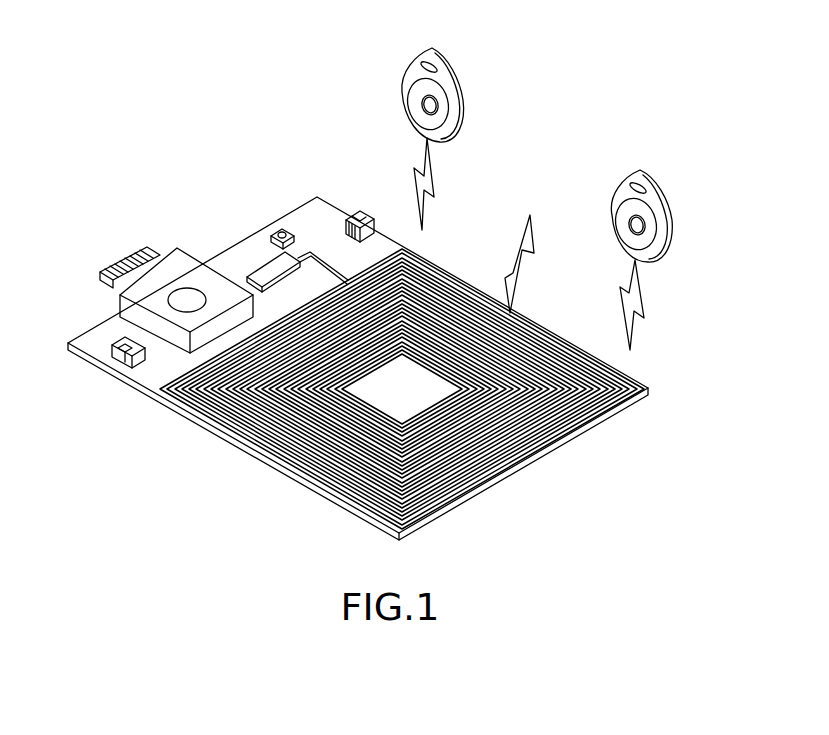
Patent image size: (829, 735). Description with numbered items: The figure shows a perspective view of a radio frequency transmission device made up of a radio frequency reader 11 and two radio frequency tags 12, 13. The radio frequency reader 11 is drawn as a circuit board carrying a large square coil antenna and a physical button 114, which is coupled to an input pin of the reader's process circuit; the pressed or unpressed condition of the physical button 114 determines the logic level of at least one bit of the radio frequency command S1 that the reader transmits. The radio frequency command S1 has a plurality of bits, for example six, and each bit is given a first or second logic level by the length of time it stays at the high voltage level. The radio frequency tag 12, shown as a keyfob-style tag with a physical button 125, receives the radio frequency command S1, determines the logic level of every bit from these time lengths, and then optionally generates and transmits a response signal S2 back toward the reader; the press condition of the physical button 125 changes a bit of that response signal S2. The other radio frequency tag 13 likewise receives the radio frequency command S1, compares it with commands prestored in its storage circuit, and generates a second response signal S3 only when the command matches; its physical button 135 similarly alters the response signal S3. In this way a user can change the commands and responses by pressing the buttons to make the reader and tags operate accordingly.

The radio frequency reader 11 is at (72, 322).
The physical button 114 is at (282, 228).
The radio frequency tag 12 is at (465, 80).
The physical button 125 is at (428, 105).
The radio frequency tag 13 is at (675, 200).
The physical button 135 is at (643, 229).
The radio frequency command S1 is at (517, 245).
The response signal S2 is at (416, 174).
The response signal S3 is at (645, 300).